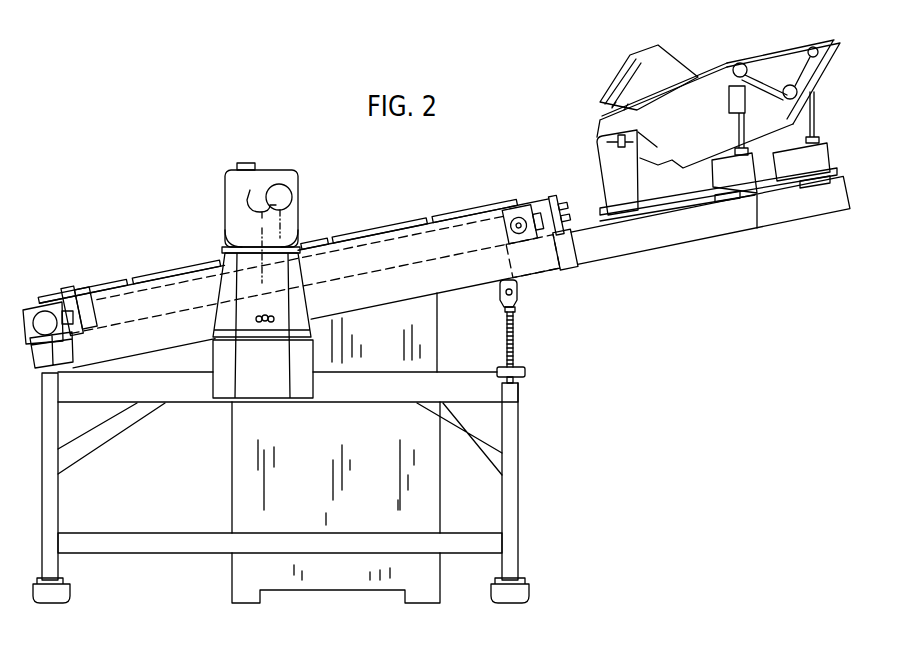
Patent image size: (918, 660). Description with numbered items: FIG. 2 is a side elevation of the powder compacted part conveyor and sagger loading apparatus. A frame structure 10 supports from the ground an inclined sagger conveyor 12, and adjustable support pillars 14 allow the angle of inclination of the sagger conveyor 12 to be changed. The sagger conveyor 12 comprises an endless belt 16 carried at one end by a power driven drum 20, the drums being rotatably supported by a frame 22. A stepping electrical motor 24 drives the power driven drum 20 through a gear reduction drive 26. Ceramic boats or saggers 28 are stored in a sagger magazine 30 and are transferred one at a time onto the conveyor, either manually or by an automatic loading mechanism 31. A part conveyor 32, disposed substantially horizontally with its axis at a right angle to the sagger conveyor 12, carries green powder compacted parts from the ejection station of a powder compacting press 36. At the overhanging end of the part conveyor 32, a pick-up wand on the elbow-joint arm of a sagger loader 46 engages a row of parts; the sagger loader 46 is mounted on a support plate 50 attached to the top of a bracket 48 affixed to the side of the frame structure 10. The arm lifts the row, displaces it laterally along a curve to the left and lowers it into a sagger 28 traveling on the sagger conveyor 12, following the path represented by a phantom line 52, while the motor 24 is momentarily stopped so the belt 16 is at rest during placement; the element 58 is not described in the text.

The frame structure 10 is at (59, 498).
The sagger conveyor 12 is at (410, 306).
The adjustable support pillars 14 is at (515, 326).
The endless belt 16 is at (393, 266).
The power driven drum 20 is at (41, 316).
The frame 22 is at (463, 283).
The stepping electrical motor 24 is at (86, 302).
The gear reduction drive 26 is at (27, 307).
The saggers 28 is at (625, 80).
The sagger magazine 30 is at (820, 71).
The automatic loading mechanism 31 is at (570, 199).
The part conveyor 32 is at (283, 240).
The powder compacting press 36 is at (231, 460).
The sagger loader 46 is at (226, 204).
The bracket 48 is at (227, 315).
The support plate 50 is at (232, 258).
The phantom line 52 is at (256, 205).
The pulley 58 is at (291, 186).